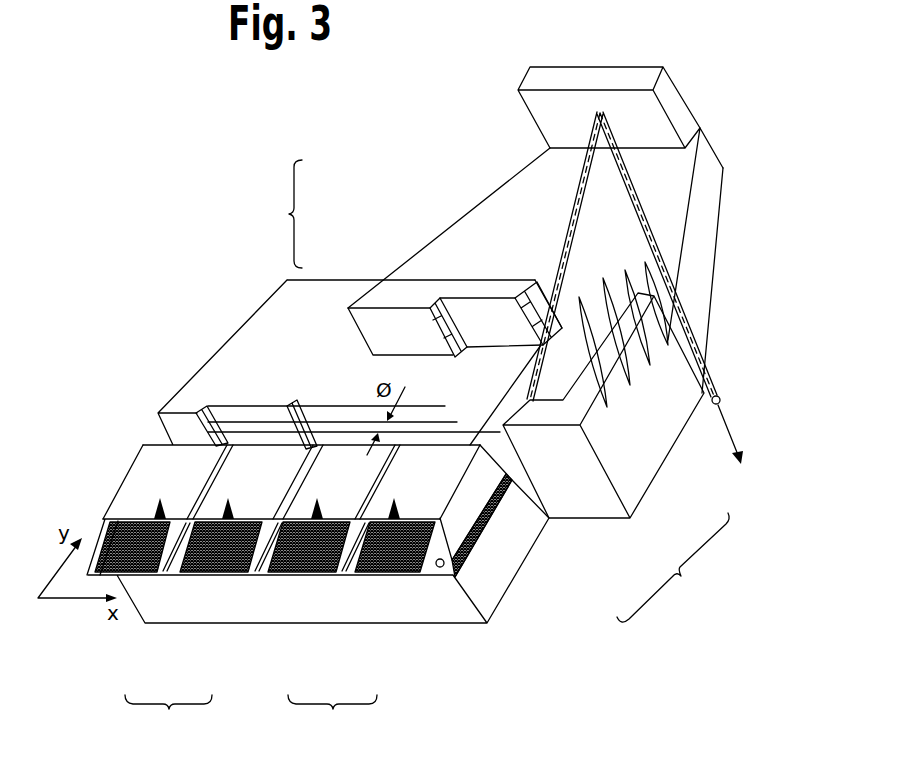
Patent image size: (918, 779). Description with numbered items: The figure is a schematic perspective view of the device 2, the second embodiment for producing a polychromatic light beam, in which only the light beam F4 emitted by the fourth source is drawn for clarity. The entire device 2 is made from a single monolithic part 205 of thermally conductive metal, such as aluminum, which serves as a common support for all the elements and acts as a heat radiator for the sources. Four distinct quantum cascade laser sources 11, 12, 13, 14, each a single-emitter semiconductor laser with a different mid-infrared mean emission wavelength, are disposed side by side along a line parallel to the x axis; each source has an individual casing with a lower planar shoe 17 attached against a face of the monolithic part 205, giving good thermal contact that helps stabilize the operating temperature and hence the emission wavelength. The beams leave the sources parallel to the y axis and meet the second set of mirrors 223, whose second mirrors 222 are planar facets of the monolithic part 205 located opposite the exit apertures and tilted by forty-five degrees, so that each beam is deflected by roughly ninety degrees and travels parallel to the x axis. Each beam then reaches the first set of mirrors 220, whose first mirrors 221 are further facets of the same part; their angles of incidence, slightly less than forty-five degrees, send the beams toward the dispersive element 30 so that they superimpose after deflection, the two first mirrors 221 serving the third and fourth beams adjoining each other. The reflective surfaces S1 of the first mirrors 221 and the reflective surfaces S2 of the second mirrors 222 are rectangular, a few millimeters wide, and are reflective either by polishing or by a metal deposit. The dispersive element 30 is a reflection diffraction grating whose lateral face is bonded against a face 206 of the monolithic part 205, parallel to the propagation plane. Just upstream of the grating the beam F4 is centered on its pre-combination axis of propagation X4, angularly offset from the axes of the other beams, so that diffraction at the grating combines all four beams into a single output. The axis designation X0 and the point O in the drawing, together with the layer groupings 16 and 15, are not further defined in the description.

The device 2 is at (198, 200).
The dispersive element 30 is at (553, 78).
The face 206 is at (668, 196).
The monolithic part 205 is at (718, 216).
The second set of mirrors 223 is at (273, 214).
The second mirror 222 is at (462, 300).
The first mirror 221 is at (630, 280).
The first set of mirrors 220 is at (616, 457).
The shoe 17 is at (243, 578).
The first electrode assembly 16 is at (168, 716).
The second electrode assembly 15 is at (332, 716).
The laser source 14 is at (175, 577).
The laser source 13 is at (197, 577).
The laser source 12 is at (292, 577).
The laser source 11 is at (353, 577).
The reflective surface S1 is at (638, 295).
The reflective surface S2 is at (538, 298).
The light beam F4 is at (460, 405).
The axis X0 is at (729, 426).
The pre-combination axis of propagation X4 is at (565, 232).
The origin point O is at (600, 113).